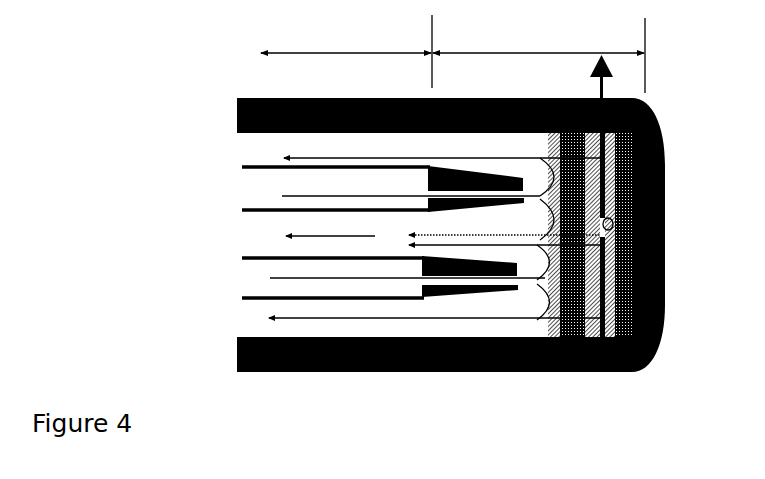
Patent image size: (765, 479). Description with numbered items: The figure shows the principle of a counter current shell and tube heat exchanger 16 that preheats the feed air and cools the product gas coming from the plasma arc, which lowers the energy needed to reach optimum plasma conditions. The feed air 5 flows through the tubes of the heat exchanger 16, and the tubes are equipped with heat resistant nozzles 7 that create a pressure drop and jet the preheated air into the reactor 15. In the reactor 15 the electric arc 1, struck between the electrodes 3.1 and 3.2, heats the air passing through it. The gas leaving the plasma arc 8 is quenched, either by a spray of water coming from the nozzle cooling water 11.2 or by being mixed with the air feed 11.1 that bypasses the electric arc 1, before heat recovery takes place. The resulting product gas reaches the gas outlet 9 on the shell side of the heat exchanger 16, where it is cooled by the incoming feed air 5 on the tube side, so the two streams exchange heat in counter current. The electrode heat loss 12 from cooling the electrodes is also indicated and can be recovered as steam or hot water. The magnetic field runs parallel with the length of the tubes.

The electric arc 1 is at (585, 232).
The electrode 3.1 is at (451, 166).
The electrode 3.2 is at (451, 303).
The feed air 5 is at (393, 232).
The nozzles 7 is at (473, 231).
The gas mix 8 is at (489, 236).
The gas outlet 9 is at (425, 243).
The air feed bypass 11.1 is at (553, 173).
The nozzle cooling water 11.2 is at (522, 251).
The electrode heat loss 12 is at (595, 77).
The reactor 15 is at (538, 55).
The heat exchanger 16 is at (346, 51).